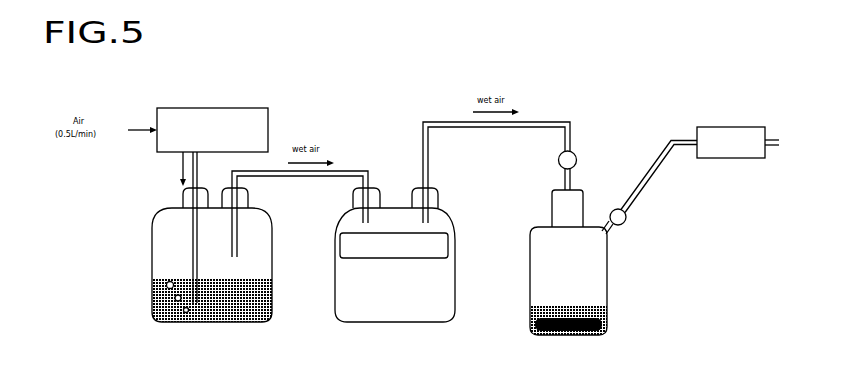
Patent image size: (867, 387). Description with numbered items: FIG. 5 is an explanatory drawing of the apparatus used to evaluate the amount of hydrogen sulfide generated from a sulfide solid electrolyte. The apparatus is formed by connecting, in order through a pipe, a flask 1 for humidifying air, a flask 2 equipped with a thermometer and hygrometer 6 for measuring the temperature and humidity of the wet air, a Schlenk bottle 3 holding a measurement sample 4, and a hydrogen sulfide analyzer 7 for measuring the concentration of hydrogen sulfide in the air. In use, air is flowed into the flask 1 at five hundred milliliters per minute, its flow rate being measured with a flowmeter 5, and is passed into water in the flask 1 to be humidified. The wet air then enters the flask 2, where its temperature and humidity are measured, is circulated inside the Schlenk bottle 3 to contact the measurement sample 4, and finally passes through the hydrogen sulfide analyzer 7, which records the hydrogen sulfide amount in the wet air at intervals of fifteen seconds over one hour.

The flask 1 is at (258, 318).
The flask 2 is at (406, 277).
The Schlenk bottle 3 is at (585, 275).
The measurement sample 4 is at (597, 330).
The flowmeter 5 is at (230, 113).
The thermometer and hygrometer 6 is at (430, 250).
The hydrogen sulfide analyzer 7 is at (722, 158).